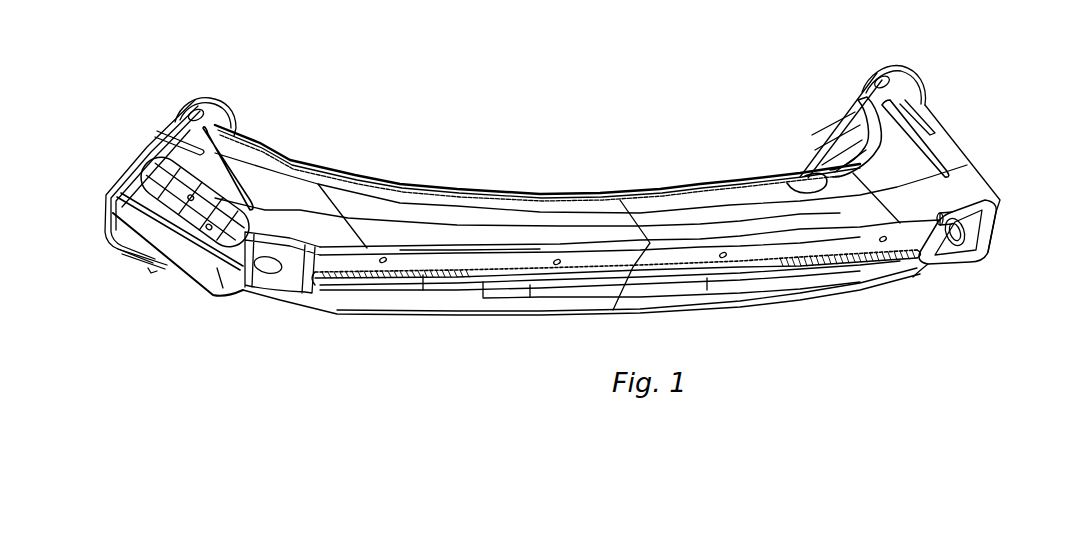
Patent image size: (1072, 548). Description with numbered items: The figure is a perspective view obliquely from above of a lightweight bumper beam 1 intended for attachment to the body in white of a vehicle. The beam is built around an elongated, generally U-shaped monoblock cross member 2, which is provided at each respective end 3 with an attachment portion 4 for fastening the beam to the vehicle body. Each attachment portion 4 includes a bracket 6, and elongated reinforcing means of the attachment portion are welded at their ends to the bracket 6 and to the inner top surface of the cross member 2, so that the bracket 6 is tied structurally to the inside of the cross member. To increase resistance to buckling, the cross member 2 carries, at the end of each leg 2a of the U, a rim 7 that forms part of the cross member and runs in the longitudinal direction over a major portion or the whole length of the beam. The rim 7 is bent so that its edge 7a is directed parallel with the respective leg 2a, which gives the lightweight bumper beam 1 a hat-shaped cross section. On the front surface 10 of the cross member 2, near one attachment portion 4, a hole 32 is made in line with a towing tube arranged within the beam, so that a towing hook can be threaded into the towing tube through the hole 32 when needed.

The lightweight bumper beam 1 is at (655, 128).
The elongated U-shaped monoblock cross member 2 is at (748, 225).
The leg of the U 2a is at (500, 232).
The end 3 is at (231, 316).
The attachment portion 4 is at (245, 168).
The bracket 6 is at (215, 120).
The rim 7 is at (535, 199).
The edge 7a is at (787, 183).
The front surface 10 is at (845, 283).
The hole 32 is at (960, 227).